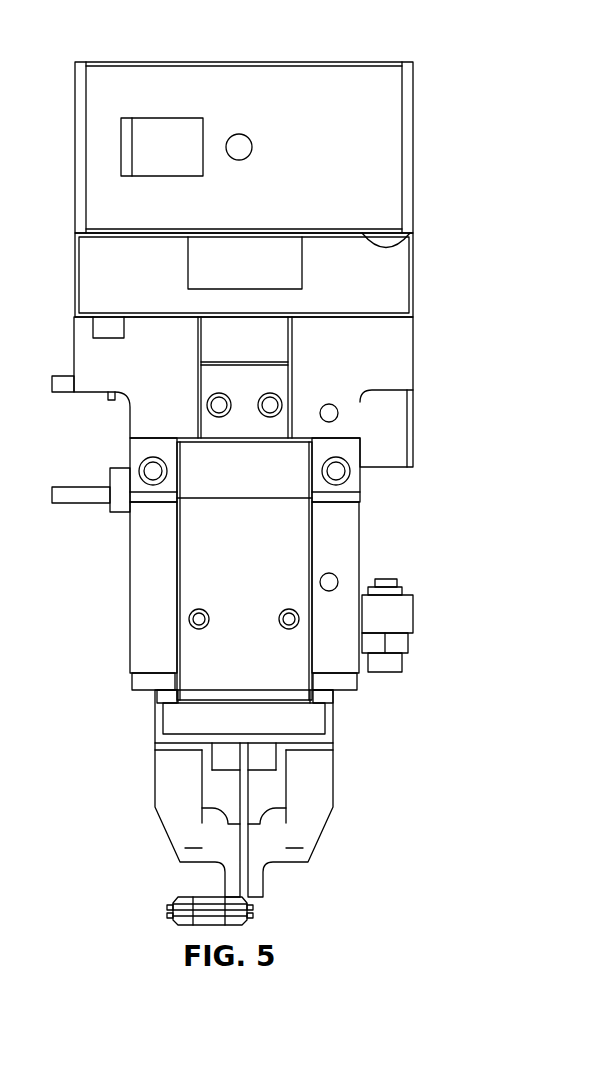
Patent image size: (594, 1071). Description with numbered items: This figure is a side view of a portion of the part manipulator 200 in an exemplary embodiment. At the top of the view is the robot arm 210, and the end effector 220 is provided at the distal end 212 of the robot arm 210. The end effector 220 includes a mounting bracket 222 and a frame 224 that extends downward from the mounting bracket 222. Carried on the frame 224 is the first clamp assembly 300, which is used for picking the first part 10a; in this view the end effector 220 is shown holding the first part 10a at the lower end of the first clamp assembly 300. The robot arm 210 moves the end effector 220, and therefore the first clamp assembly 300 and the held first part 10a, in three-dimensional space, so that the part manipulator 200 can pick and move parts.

The part manipulator 200 is at (505, 129).
The robot arm 210 is at (378, 118).
The distal end 212 is at (415, 240).
The end effector 220 is at (445, 322).
The mounting bracket 222 is at (388, 275).
The frame 224 is at (372, 360).
The first clamp assembly 300 is at (400, 744).
The first part 10a is at (173, 915).